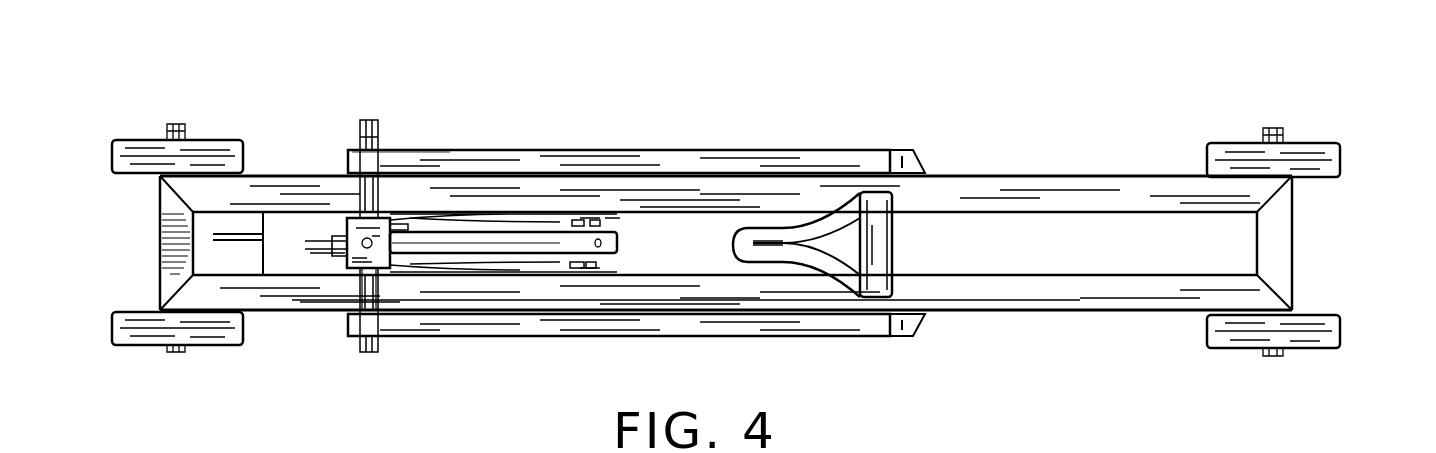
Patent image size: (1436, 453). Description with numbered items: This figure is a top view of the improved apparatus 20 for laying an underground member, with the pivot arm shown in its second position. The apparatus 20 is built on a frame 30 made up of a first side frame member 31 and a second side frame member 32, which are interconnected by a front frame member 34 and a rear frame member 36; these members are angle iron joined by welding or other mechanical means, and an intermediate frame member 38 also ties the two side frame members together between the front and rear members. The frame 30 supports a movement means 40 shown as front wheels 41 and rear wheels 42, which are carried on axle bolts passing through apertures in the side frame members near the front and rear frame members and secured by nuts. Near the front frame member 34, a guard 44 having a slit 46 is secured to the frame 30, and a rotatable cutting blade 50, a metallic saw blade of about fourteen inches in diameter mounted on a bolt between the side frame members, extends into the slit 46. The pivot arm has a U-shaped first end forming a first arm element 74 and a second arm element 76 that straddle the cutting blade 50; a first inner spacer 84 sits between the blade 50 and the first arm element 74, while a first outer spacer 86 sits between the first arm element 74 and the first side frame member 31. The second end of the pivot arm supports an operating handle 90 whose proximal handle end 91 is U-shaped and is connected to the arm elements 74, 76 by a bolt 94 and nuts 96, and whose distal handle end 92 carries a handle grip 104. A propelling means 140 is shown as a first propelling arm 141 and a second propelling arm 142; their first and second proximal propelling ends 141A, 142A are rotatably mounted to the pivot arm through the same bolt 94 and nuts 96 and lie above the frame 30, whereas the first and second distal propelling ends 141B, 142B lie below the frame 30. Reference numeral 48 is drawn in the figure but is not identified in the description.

The apparatus 20 is at (1092, 128).
The frame 30 is at (1042, 176).
The first side frame member 31 is at (958, 194).
The second side frame member 32 is at (1072, 302).
The front frame member 34 is at (170, 250).
The rear frame member 36 is at (1270, 212).
The intermediate frame member 38 is at (582, 270).
The movement means 40 is at (136, 104).
The front wheels 41 is at (136, 150).
The rear wheels 42 is at (1300, 146).
The guard 44 is at (203, 265).
The slit 46 is at (203, 230).
The connector assembly 48 is at (298, 402).
The rotatable cutting blade 50 is at (305, 240).
The first arm element 74 is at (455, 212).
The second arm element 76 is at (472, 272).
The first inner spacer 84 is at (348, 176).
The first outer spacer 86 is at (350, 296).
The operating handle 90 is at (636, 253).
The proximal handle end 91 is at (544, 243).
The distal handle end 92 is at (756, 236).
The bolt 94 is at (367, 352).
The nuts 96 is at (370, 120).
The handle grip 104 is at (893, 240).
The propelling means 140 is at (618, 378).
The first propelling arm 141 is at (680, 164).
The first proximal propelling end 141A is at (368, 160).
The first distal propelling end 141B is at (905, 165).
The second propelling arm 142 is at (782, 328).
The second proximal propelling end 142A is at (388, 326).
The second distal propelling end 142B is at (905, 325).